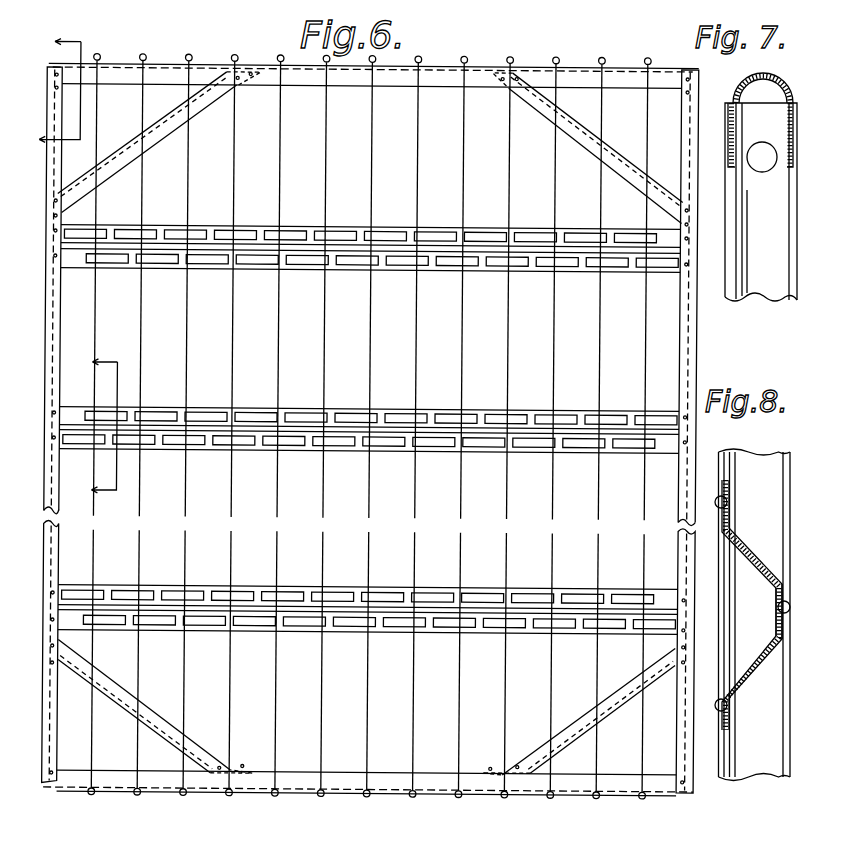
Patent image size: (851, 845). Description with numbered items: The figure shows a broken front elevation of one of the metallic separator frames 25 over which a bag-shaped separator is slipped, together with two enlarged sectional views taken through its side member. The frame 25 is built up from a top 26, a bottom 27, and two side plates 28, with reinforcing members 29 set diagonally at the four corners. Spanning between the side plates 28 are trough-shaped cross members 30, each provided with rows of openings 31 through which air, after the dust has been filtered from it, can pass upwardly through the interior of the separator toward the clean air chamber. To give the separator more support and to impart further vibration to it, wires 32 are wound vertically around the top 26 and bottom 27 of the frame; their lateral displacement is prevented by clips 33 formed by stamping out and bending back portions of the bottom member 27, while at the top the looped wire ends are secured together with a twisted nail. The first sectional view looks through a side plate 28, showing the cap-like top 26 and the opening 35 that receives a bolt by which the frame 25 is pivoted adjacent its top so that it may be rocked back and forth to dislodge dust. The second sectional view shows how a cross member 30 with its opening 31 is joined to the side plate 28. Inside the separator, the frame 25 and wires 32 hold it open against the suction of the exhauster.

In FIG. 6, the separator frame 25 is at (234, 49).
In FIG. 6, the top 26 is at (438, 73).
In FIG. 7, the top 26 is at (783, 85).
In FIG. 6, the bottom 27 is at (299, 782).
In FIG. 6, the side plates 28 is at (46, 542).
In FIG. 7, the side plates 28 is at (769, 288).
In FIG. 8, the side plates 28 is at (756, 762).
In FIG. 6, the reinforcing members 29 is at (604, 160).
In FIG. 6, the trough-shaped cross members 30 is at (353, 264).
In FIG. 8, the trough-shaped cross members 30 is at (734, 539).
In FIG. 6, the openings 31 is at (446, 247).
In FIG. 8, the openings 31 is at (767, 574).
In FIG. 6, the wires 32 is at (330, 138).
In FIG. 6, the clips 33 is at (445, 805).
In FIG. 7, the opening 35 is at (762, 143).